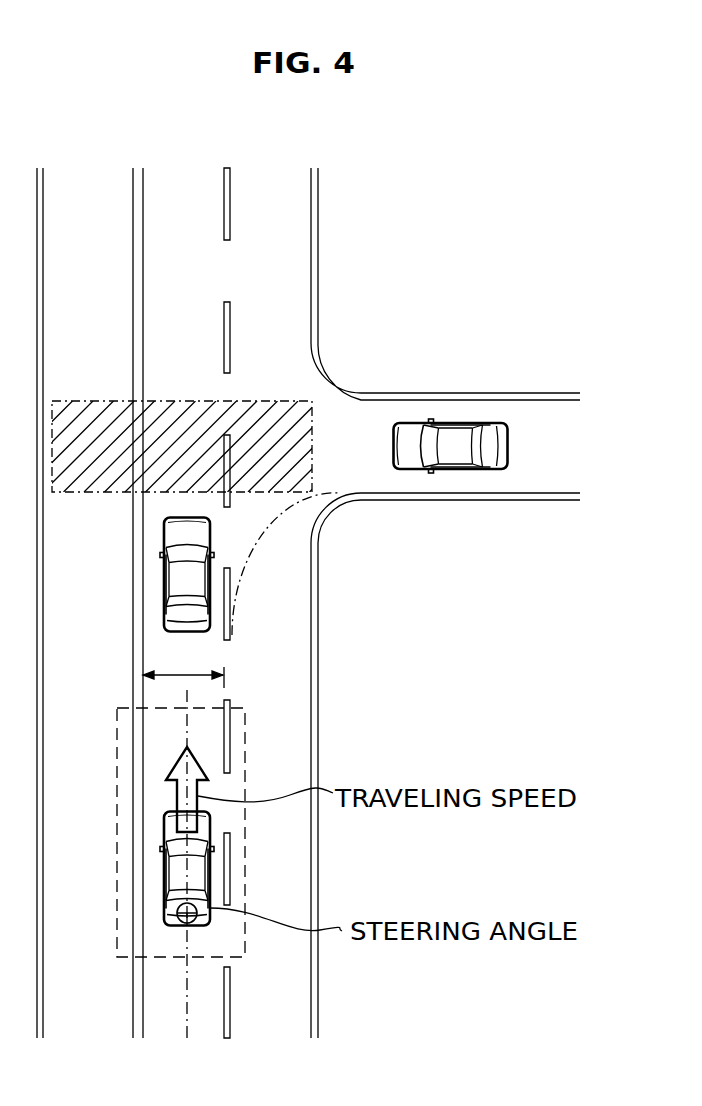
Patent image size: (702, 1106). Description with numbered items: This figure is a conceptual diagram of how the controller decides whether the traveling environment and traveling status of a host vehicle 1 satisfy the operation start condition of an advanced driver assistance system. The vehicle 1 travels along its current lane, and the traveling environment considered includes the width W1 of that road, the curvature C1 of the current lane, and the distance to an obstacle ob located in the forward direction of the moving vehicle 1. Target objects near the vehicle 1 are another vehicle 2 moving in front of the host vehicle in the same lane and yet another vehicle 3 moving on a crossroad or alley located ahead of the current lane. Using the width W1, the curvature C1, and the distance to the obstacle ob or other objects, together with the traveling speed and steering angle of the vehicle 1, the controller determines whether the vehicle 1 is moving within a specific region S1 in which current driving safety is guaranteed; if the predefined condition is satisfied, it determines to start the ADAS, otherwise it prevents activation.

The vehicle 1 is at (179, 873).
The another vehicle 2 is at (178, 580).
The yet another vehicle 3 is at (457, 435).
The obstacle ob is at (185, 400).
The curvature of the road C1 is at (250, 560).
The width of the road W1 is at (183, 668).
The specific region S1 is at (245, 855).